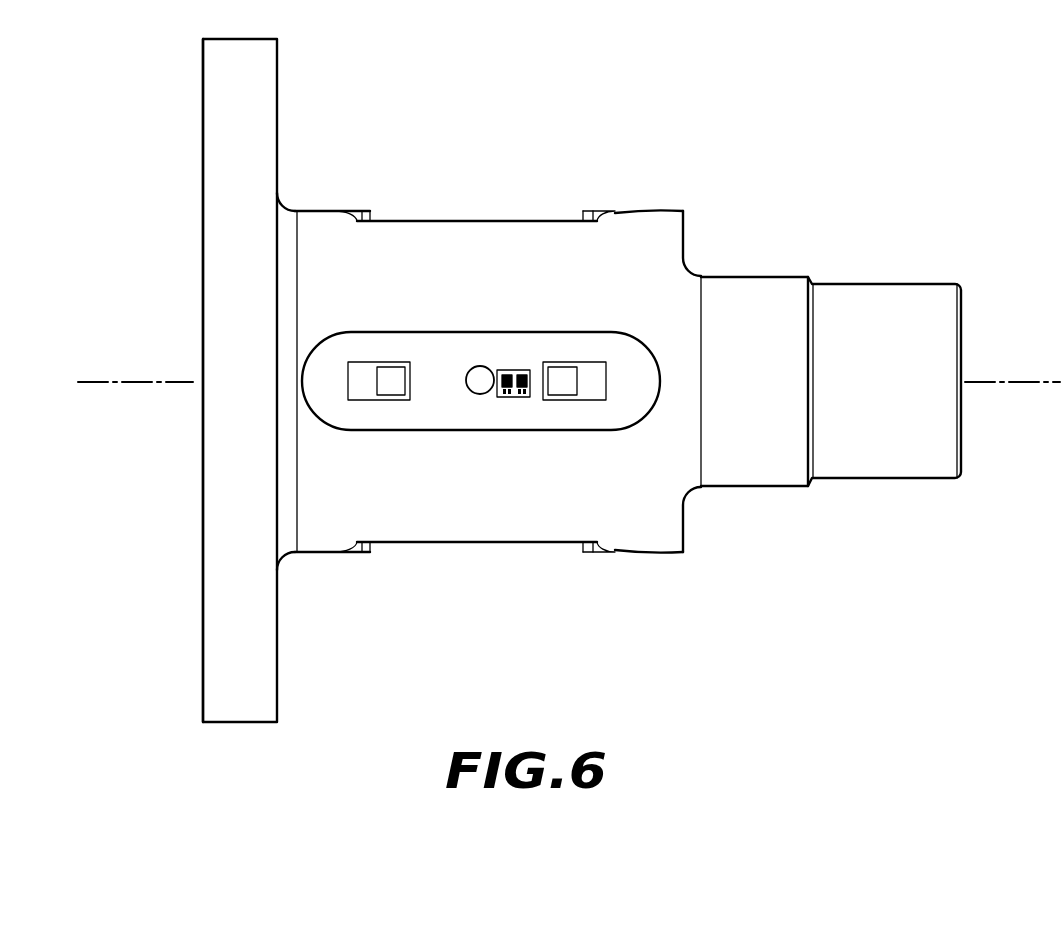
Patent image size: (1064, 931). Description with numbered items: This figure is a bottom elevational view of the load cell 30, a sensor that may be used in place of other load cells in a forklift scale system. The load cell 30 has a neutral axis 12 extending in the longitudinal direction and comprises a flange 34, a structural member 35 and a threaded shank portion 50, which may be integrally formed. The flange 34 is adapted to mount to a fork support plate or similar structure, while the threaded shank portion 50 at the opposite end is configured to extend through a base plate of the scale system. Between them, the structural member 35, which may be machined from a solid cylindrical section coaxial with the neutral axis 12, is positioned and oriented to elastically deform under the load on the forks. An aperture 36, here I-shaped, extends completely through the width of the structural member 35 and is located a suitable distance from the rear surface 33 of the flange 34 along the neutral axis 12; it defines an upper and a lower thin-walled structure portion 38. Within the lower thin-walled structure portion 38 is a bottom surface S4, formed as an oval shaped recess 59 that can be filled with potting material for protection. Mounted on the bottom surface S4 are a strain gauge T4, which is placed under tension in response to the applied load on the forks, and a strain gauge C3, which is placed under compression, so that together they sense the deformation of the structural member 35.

The load cell 30 is at (833, 178).
The flange 34 is at (232, 119).
The rear surface 33 is at (203, 198).
The lower thin-walled structure portion 38 is at (401, 237).
The structural member 35 is at (631, 218).
The aperture 36 is at (557, 215).
The threaded shank portion 50 is at (950, 322).
The neutral axis 12 is at (128, 384).
The oval shaped recess 59 is at (445, 432).
The strain gauge C3 is at (392, 377).
The bottom surface S4 is at (452, 408).
The strain gauge T4 is at (561, 396).